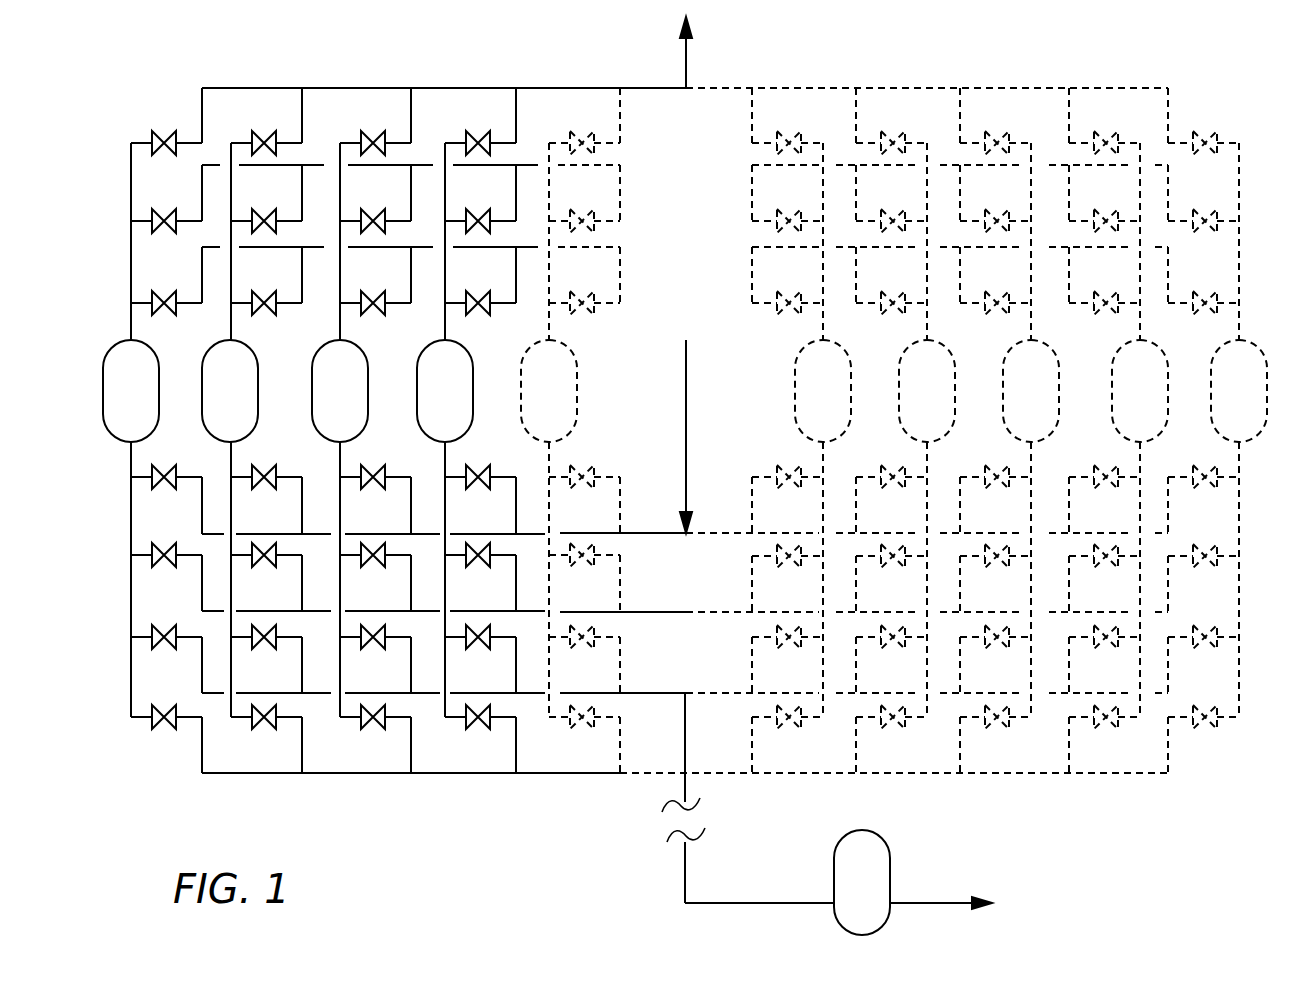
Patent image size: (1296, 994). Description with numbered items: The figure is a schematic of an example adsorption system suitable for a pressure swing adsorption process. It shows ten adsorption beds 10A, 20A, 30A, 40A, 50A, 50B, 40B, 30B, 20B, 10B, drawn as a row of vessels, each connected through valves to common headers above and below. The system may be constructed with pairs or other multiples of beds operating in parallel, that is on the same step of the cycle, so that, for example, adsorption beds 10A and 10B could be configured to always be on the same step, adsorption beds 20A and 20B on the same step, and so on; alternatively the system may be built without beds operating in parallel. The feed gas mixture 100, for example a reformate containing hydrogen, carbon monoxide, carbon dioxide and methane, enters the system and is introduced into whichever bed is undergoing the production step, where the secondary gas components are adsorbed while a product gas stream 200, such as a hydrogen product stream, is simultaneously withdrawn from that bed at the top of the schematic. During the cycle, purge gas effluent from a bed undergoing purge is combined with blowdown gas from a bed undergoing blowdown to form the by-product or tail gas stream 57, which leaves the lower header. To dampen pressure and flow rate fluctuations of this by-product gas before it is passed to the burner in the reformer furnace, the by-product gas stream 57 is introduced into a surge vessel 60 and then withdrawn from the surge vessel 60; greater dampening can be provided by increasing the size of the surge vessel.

The adsorption bed 10A is at (111, 398).
The adsorption bed 20A is at (210, 398).
The adsorption bed 30A is at (320, 398).
The adsorption bed 40A is at (425, 398).
The adsorption bed 50A is at (529, 398).
The adsorption bed 50B is at (803, 398).
The adsorption bed 40B is at (907, 398).
The adsorption bed 30B is at (1011, 398).
The adsorption bed 20B is at (1120, 398).
The adsorption bed 10B is at (1219, 398).
The feed gas mixture 100 is at (686, 416).
The product gas stream 200 is at (686, 62).
The by-product gas stream 57 is at (787, 903).
The surge vessel 60 is at (849, 891).